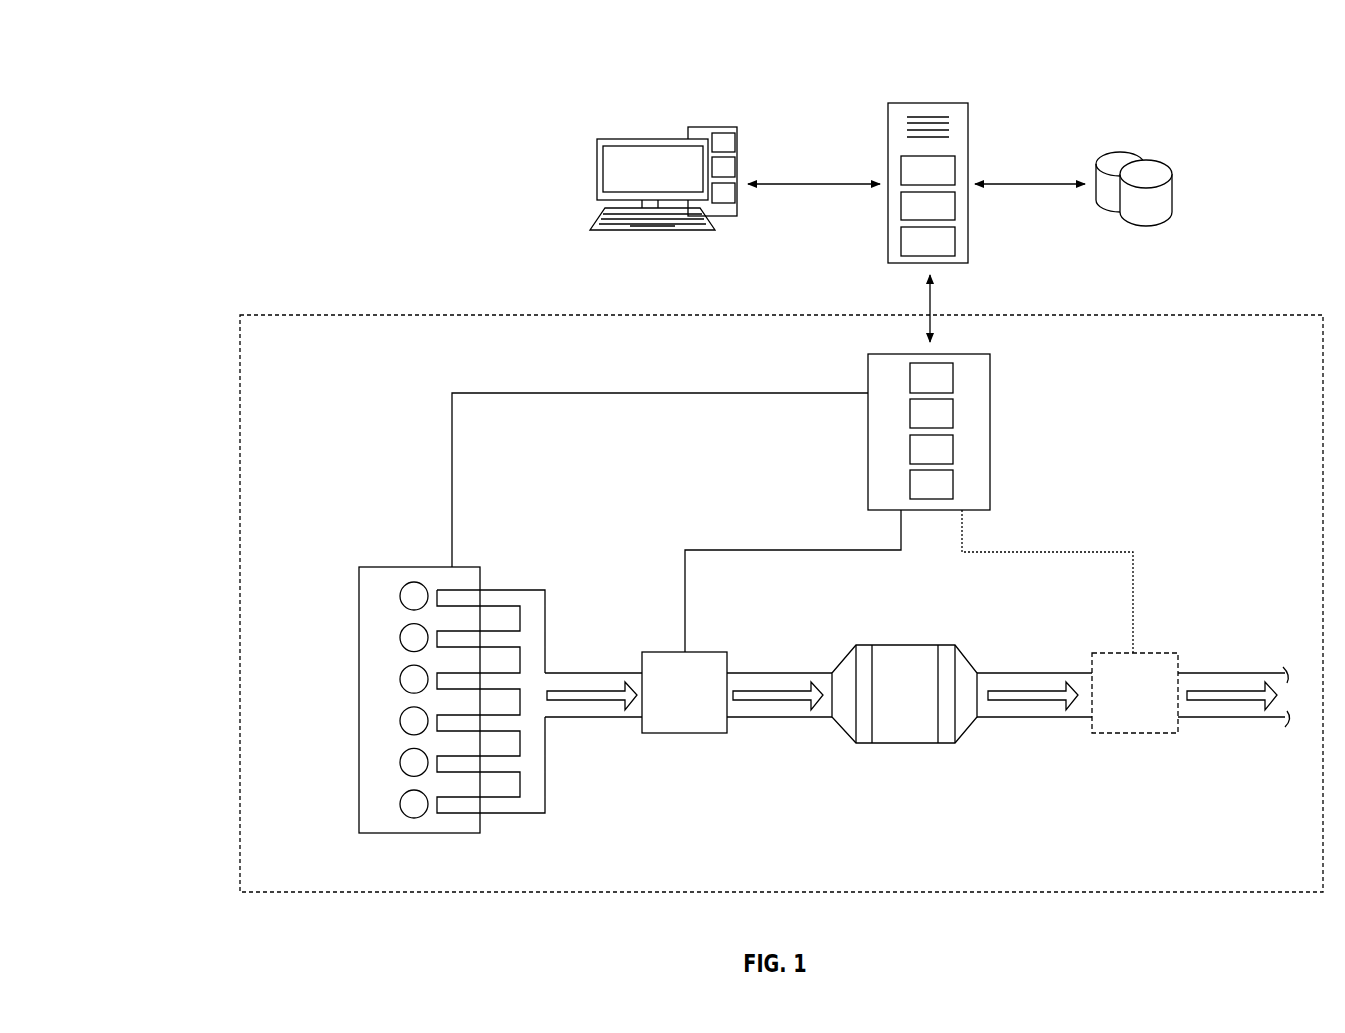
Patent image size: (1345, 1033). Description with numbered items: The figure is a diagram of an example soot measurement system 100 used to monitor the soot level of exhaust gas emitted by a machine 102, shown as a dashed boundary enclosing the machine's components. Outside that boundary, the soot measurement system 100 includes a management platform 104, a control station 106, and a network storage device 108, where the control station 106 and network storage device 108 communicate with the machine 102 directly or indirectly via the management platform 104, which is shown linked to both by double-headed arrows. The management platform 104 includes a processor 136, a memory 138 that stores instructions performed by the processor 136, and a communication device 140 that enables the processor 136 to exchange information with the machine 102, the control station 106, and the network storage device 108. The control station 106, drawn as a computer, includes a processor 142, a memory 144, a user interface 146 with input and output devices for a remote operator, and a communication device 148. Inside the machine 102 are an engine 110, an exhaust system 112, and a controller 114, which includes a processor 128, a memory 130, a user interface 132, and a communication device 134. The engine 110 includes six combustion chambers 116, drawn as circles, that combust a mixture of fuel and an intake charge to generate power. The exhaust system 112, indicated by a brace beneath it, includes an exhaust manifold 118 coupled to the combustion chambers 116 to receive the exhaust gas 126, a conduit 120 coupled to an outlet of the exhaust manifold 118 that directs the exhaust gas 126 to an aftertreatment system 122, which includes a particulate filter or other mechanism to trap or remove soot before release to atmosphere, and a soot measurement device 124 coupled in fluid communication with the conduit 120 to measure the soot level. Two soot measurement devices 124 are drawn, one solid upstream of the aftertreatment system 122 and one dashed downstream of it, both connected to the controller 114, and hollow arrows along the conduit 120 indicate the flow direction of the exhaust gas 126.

The soot measurement system 100 is at (229, 94).
The machine 102 is at (240, 397).
The management platform 104 is at (938, 103).
The control station 106 is at (667, 161).
The network storage device 108 is at (1125, 152).
The engine 110 is at (427, 683).
The exhaust system 112 is at (869, 721).
The controller 114 is at (965, 354).
The combustion chambers 116 is at (372, 676).
The exhaust manifold 118 is at (531, 592).
The conduit 120 is at (762, 672).
The aftertreatment system 122 is at (890, 645).
The soot measurement device 124 is at (910, 692).
The exhaust gas 126 is at (575, 698).
The processor 128 is at (931, 378).
The memory 130 is at (931, 413).
The user interface 132 is at (931, 449).
The communication device 134 is at (931, 484).
The processor 136 is at (928, 170).
The memory 138 is at (928, 206).
The communication device 140 is at (928, 241).
The processor 142 is at (727, 147).
The memory 144 is at (727, 171).
The user interface 146 is at (590, 148).
The communication device 148 is at (727, 194).